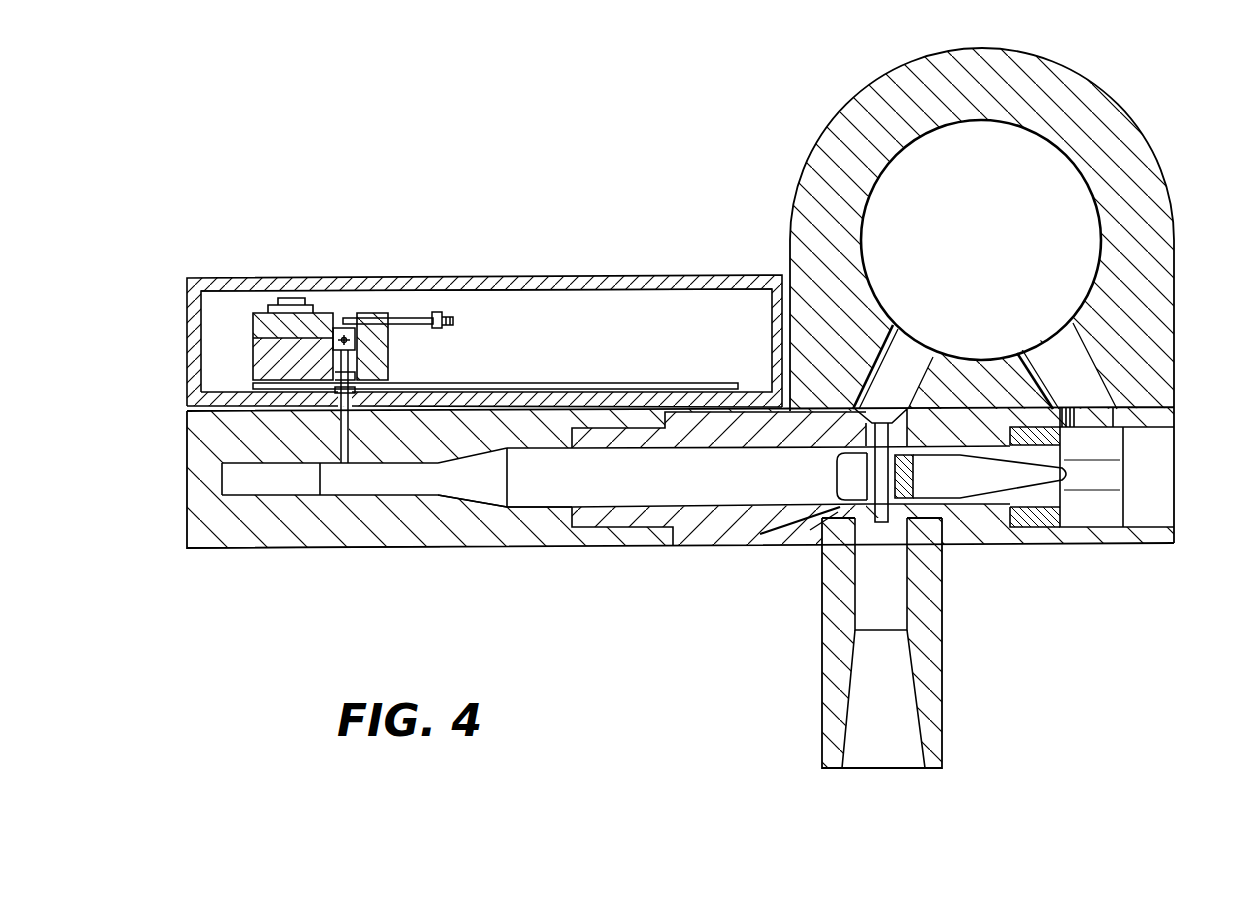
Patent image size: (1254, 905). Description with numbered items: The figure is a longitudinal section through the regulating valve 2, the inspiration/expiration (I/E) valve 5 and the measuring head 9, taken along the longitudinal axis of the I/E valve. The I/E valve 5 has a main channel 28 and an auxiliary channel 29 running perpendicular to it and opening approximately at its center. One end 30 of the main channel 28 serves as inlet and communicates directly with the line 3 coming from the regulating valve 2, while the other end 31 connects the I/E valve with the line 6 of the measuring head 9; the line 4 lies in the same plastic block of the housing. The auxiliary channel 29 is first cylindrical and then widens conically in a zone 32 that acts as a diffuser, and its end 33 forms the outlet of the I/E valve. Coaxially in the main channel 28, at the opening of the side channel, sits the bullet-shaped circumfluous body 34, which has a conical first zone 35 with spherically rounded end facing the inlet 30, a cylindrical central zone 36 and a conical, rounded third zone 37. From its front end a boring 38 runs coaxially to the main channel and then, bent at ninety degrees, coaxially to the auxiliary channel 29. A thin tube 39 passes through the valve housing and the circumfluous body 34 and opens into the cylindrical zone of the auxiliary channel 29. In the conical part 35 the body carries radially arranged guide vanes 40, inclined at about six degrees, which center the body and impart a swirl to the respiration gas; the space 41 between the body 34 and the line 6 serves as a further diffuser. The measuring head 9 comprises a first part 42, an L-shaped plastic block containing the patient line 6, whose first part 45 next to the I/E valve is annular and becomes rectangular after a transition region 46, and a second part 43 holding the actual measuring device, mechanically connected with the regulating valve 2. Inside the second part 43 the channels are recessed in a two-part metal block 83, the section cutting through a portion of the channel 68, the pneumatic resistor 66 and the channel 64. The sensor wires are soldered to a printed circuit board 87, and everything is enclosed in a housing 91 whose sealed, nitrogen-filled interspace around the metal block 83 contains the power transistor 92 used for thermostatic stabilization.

The regulating valve 2 is at (1146, 198).
The line 3 is at (1050, 355).
The line 4 is at (913, 357).
The I/E valve 5 is at (823, 578).
The patient line 6 is at (518, 502).
The measuring head 9 is at (338, 566).
The main channel 28 is at (759, 506).
The auxiliary channel 29 is at (897, 597).
The inlet end 30 is at (1108, 470).
The other end of main channel 31 is at (560, 496).
The conically widened zone 32 is at (905, 681).
The outlet end 33 is at (900, 769).
The circumfluous body 34 is at (1003, 491).
The first zone 35 is at (1057, 490).
The central zone 36 is at (944, 522).
The third zone 37 is at (760, 534).
The boring 38 is at (835, 474).
The thin tube 39 is at (810, 530).
The guide vanes 40 is at (1062, 491).
The space 41 is at (655, 492).
The first part of measuring head 42 is at (216, 549).
The second part of measuring head 43 is at (194, 280).
The first part of channel 45 is at (555, 492).
The transition region 46 is at (485, 492).
The channel 64 is at (379, 318).
The pneumatic resistor 66 is at (341, 327).
The channel 68 is at (341, 329).
The metal block 83 is at (394, 314).
The printed circuit board 87 is at (564, 383).
The housing 91 is at (531, 277).
The power transistor 92 is at (273, 299).